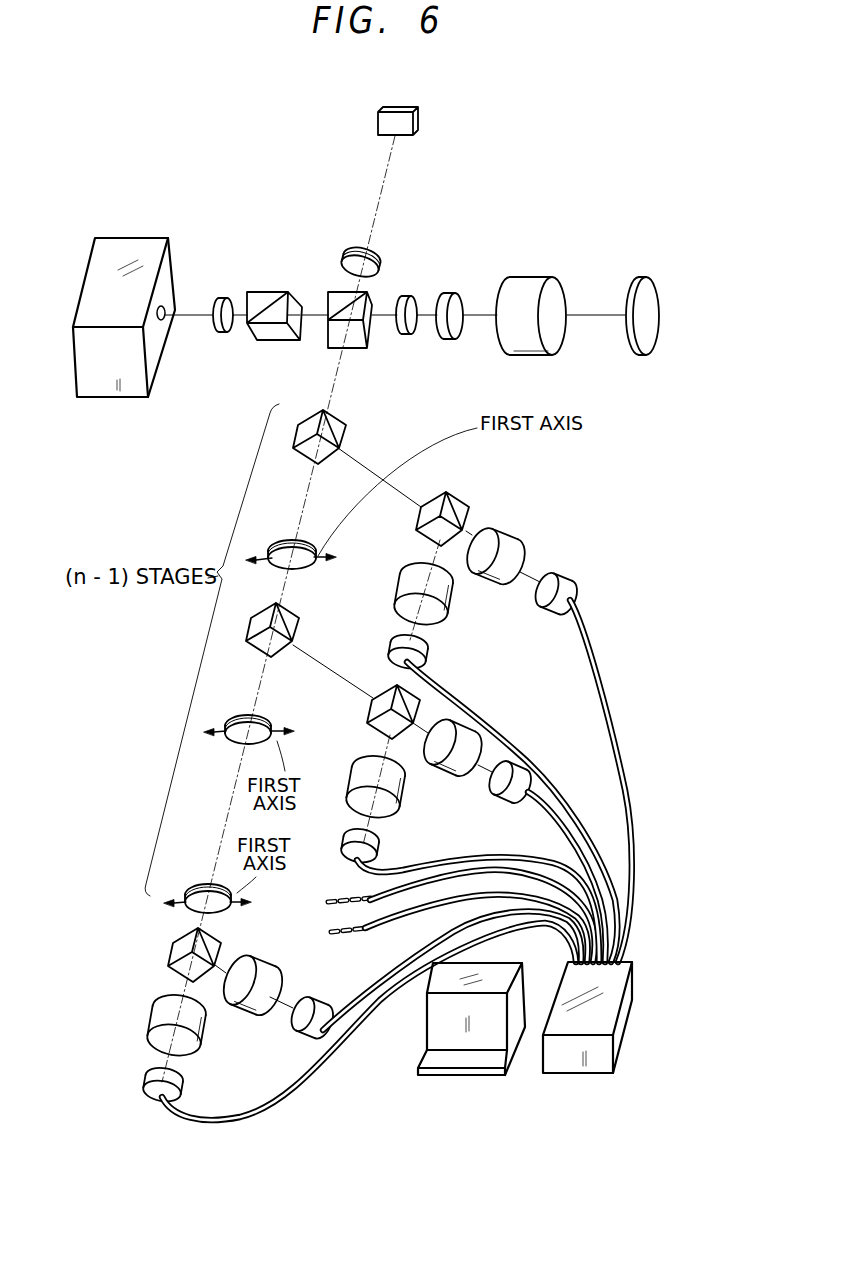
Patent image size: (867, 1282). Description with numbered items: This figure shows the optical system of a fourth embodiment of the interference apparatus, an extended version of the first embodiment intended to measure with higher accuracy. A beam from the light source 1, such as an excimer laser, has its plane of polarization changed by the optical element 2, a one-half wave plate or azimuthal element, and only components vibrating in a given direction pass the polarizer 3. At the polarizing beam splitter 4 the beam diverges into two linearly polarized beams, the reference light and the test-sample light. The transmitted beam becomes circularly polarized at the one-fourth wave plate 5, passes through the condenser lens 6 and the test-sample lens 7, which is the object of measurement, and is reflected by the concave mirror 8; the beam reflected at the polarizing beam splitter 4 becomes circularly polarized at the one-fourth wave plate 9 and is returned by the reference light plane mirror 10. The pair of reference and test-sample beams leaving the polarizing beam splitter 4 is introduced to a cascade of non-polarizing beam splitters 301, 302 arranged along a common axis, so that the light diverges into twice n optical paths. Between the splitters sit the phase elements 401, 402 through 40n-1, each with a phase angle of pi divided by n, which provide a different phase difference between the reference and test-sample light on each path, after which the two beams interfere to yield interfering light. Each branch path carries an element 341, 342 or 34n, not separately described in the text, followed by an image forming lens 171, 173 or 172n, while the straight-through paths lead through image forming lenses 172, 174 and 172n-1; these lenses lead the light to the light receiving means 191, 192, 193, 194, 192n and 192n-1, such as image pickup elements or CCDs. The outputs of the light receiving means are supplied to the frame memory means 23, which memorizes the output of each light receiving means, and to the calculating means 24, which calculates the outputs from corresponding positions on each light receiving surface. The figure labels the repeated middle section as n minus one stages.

The light source 1 is at (102, 398).
The optical element 2 is at (216, 335).
The polarizer 3 is at (268, 342).
The polarizing beam splitter 4 is at (358, 353).
The one-fourth wave plate 5 is at (407, 337).
The condenser lens 6 is at (450, 291).
The test-sample lens 7 is at (540, 277).
The concave mirror 8 is at (638, 350).
The one-fourth wave plate 9 is at (370, 248).
The reference light plane mirror 10 is at (418, 125).
The non-polarizing beam splitter 301 is at (350, 435).
The non-polarizing beam splitter 302 is at (302, 633).
The phase element 401 is at (300, 545).
The phase element 402 is at (265, 718).
The phase element 40n-1 is at (228, 913).
The beam splitter 341 is at (462, 497).
The beam splitter 342 is at (420, 711).
The beam splitter of nth stage 34n is at (172, 951).
The image forming lens 171 is at (512, 533).
The image forming lens 172 is at (452, 609).
The image forming lens 173 is at (482, 748).
The image forming lens 174 is at (401, 795).
The image forming lens 172n is at (270, 966).
The image forming lens 172n-1 is at (150, 1020).
The light receiving means 191 is at (573, 571).
The light receiving means 192 is at (428, 655).
The light receiving means 193 is at (532, 781).
The light receiving means 194 is at (383, 843).
The light receiving means 192n is at (300, 1033).
The light receiving means 192n-1 is at (142, 1081).
The frame memory means 23 is at (625, 1037).
The calculating means 24 is at (455, 1078).